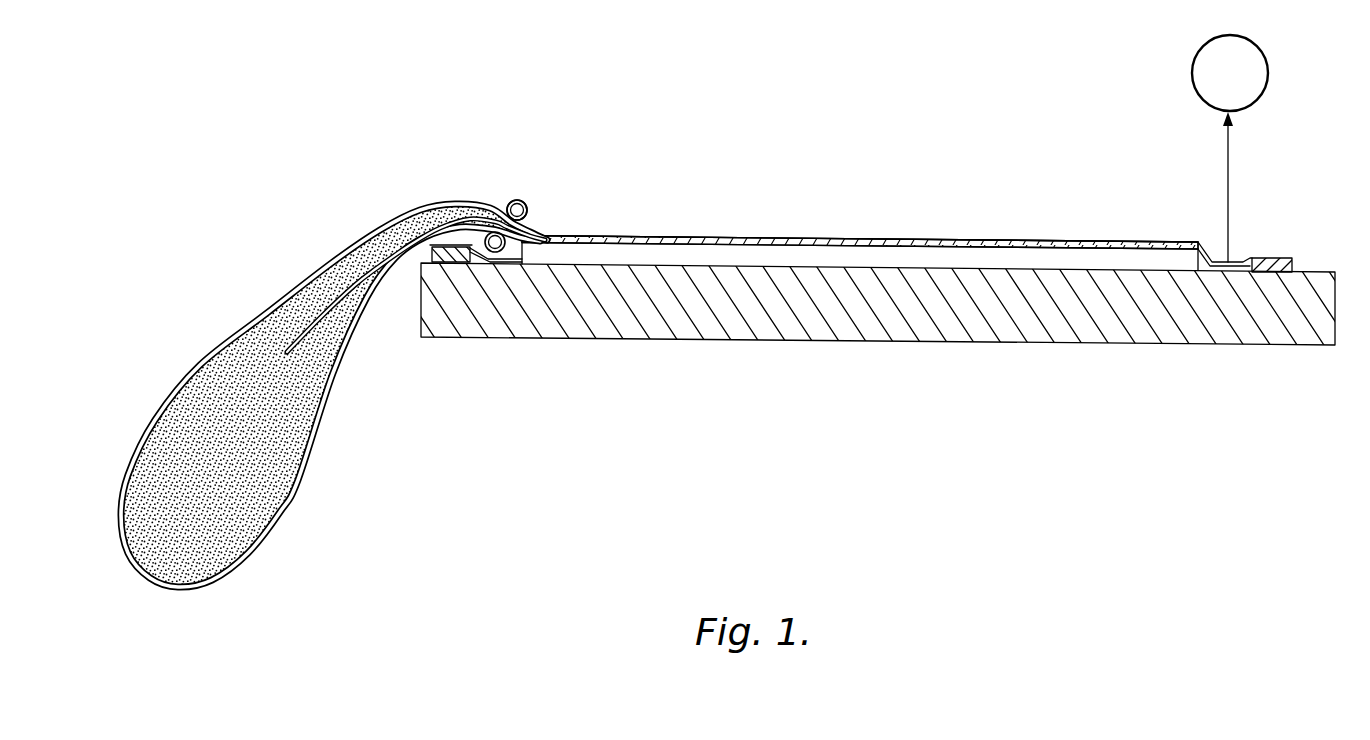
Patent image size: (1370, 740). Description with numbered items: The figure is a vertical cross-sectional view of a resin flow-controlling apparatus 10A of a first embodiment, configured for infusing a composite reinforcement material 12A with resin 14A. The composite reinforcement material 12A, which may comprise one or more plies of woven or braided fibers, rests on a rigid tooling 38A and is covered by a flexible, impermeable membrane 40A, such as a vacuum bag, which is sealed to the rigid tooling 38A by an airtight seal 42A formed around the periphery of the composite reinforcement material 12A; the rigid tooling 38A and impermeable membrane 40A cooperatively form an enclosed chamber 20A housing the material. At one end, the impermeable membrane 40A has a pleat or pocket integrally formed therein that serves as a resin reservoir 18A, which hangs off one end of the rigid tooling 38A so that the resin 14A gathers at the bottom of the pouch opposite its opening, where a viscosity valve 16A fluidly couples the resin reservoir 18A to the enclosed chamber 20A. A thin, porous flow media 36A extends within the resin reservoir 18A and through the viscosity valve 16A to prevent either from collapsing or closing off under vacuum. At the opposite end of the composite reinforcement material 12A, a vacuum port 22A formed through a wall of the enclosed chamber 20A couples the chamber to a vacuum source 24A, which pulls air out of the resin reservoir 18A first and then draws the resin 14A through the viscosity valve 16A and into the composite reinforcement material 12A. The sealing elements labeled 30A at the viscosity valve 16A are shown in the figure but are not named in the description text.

The resin flow-controlling apparatus 10A is at (672, 112).
The composite reinforcement material 12A is at (855, 258).
The resin 14A is at (287, 457).
The viscosity valve 16A is at (515, 200).
The resin reservoir 18A is at (215, 350).
The enclosed chamber 20A is at (783, 266).
The vacuum port 22A is at (1230, 262).
The vacuum source 24A is at (1193, 62).
The O-ring seals 30A is at (488, 237).
The flow media 36A is at (343, 283).
The rigid tooling 38A is at (1105, 330).
The impermeable membrane 40A is at (1030, 242).
The airtight seal 42A is at (432, 252).